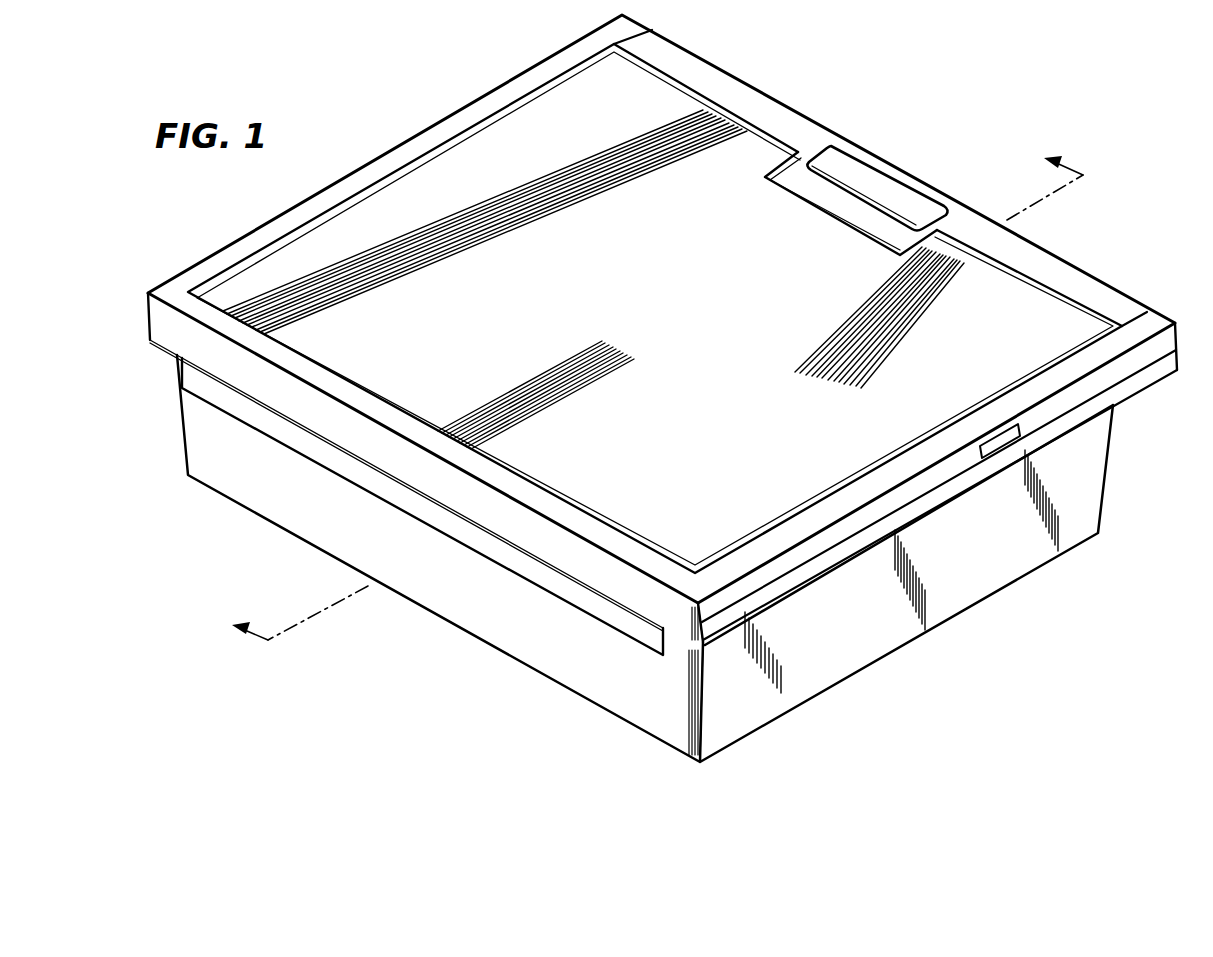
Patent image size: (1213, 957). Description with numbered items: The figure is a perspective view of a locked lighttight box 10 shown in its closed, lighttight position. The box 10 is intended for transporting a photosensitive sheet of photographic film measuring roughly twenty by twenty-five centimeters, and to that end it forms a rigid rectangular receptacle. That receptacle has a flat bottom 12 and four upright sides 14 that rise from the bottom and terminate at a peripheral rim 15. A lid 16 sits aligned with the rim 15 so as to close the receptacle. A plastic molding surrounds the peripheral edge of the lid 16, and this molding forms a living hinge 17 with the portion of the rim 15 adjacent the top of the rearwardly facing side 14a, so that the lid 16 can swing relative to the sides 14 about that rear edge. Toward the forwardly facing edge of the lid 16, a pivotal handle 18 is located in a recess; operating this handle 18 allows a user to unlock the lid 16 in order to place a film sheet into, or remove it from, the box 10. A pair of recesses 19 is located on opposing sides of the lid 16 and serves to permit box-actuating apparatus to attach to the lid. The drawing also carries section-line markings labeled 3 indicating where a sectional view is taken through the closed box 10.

The lighttight box 10 is at (1088, 240).
The flat bottom 12 is at (897, 650).
The upright sides 14 is at (940, 604).
The rearwardly facing side 14a is at (445, 592).
The peripheral rim 15 is at (1142, 376).
The lid 16 is at (430, 205).
The living hinge 17 is at (683, 620).
The pivotal handle 18 is at (878, 193).
The recesses 19 is at (992, 452).
The section line 3- 3 is at (646, 391).